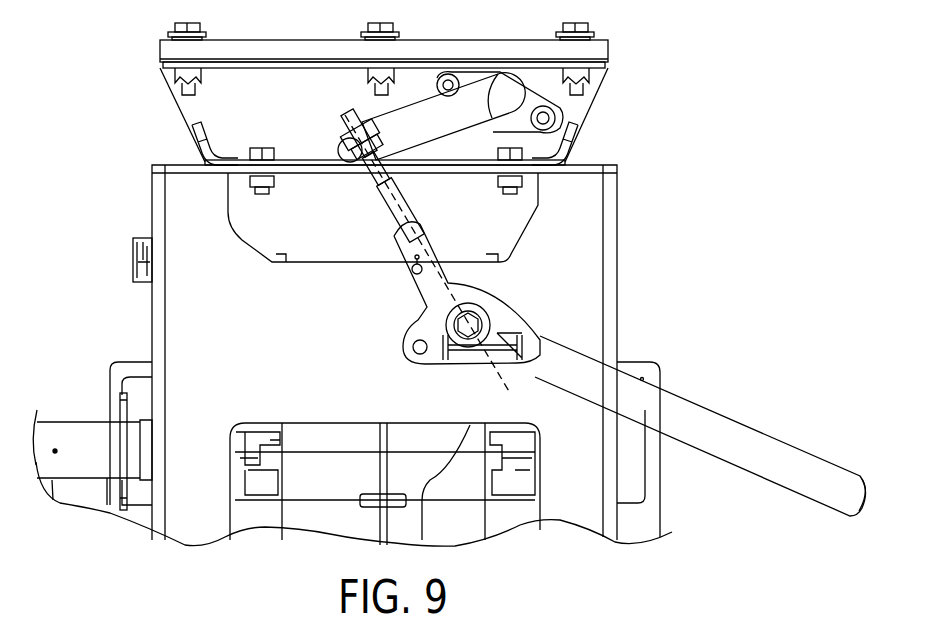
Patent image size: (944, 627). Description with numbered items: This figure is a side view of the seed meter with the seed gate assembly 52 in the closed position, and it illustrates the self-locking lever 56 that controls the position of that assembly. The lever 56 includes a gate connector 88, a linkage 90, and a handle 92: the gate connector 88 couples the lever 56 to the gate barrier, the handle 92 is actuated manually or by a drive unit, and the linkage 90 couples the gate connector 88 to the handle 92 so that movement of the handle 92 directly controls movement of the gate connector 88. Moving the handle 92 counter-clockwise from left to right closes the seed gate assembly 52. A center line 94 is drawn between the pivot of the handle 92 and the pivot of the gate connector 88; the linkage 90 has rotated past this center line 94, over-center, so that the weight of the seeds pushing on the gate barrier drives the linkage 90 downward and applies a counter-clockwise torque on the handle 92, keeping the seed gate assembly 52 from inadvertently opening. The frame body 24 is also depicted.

The seed gate assembly 52 is at (160, 54).
The frame body 24 is at (152, 200).
The gate connector 88 is at (364, 122).
The linkage 90 is at (380, 208).
The center line 94 is at (450, 286).
The lever 56 is at (685, 384).
The handle 92 is at (760, 458).